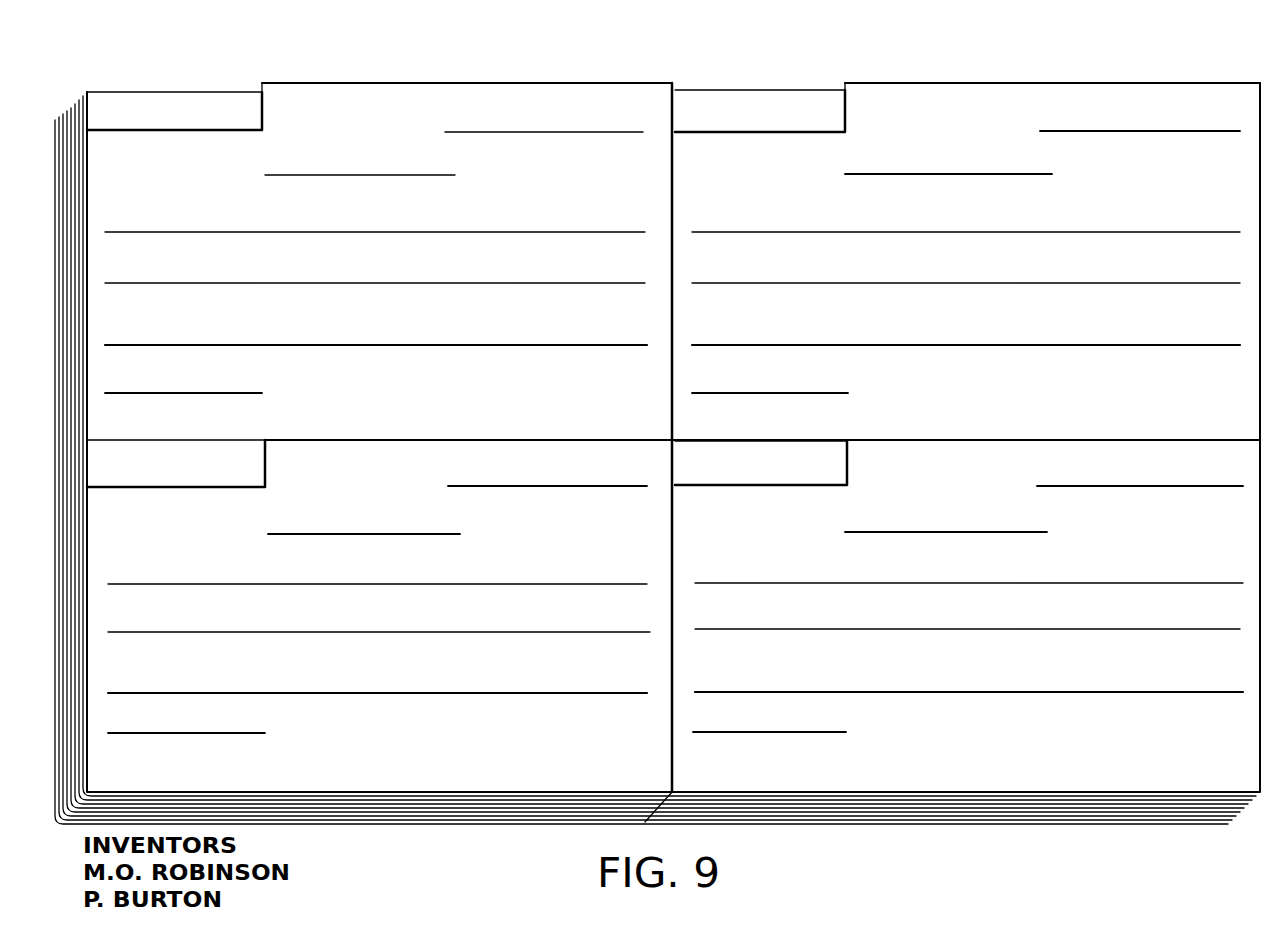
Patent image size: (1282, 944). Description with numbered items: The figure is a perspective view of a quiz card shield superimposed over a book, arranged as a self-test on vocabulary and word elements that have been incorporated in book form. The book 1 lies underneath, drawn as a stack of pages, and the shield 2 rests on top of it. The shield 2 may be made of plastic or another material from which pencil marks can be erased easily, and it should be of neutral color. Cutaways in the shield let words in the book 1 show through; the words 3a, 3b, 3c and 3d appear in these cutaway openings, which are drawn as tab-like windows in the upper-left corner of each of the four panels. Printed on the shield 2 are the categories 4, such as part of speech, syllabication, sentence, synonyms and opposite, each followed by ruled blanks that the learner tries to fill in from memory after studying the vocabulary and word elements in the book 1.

The book 1 is at (868, 805).
The shield 2 is at (987, 760).
The word appearing through cutaway 3a is at (157, 102).
The word appearing through cutaway 3b is at (97, 462).
The word appearing through cutaway 3c is at (708, 97).
The word appearing through cutaway 3d is at (765, 478).
The categories printed on card shield 4 is at (377, 113).